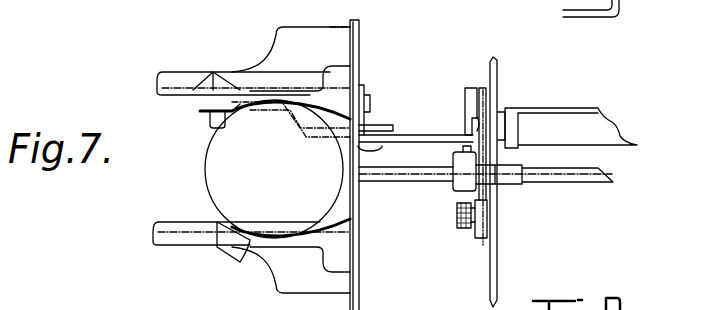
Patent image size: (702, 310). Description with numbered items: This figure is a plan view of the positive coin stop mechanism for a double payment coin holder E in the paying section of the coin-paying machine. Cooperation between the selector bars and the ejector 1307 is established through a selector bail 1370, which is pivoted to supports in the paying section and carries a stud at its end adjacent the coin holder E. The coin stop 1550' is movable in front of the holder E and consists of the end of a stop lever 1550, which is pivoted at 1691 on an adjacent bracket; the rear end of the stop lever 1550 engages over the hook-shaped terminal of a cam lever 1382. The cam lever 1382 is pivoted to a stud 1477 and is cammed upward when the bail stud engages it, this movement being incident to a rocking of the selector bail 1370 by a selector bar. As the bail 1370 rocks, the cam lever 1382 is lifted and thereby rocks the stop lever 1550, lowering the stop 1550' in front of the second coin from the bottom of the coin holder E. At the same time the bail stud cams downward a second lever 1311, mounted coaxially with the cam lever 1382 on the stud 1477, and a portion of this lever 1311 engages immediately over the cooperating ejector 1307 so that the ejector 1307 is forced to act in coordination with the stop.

The ejector 1307 is at (441, 174).
The second lever 1311 is at (489, 112).
The selector bail 1370 is at (590, 128).
The cam lever 1382 is at (464, 121).
The stud 1477 is at (493, 215).
The stop lever 1550 is at (435, 167).
The coin stop 1550' is at (231, 168).
The pivot 1691 is at (398, 141).
The double payment coin holder E is at (263, 169).